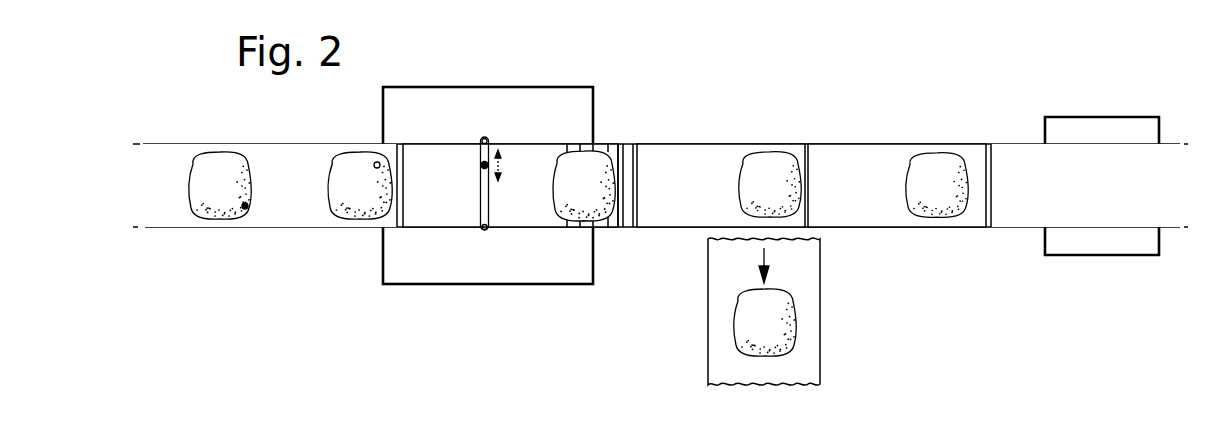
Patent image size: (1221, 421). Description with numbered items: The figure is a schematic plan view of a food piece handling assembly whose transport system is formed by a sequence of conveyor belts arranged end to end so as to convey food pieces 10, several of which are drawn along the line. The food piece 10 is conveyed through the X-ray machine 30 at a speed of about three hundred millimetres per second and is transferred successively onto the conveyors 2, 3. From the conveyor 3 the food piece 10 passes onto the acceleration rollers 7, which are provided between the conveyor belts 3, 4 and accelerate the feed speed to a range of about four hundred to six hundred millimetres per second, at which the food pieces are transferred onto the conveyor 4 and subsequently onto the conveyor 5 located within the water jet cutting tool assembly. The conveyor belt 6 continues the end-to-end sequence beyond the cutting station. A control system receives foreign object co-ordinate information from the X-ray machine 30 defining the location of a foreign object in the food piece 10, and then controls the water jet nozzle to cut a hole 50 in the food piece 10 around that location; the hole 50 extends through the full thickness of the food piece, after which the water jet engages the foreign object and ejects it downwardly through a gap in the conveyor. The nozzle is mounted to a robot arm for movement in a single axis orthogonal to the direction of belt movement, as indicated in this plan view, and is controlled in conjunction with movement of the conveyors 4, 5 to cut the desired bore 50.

The conveyor belt 2 is at (890, 217).
The conveyor belt 3 is at (663, 213).
The conveyor belt 4 is at (530, 215).
The conveyor belt 5 is at (441, 160).
The conveyor belt 6 is at (288, 168).
The acceleration rollers 7 is at (618, 141).
The food piece 10 is at (207, 170).
The X-ray machine 30 is at (1116, 116).
The hole 50 is at (375, 163).